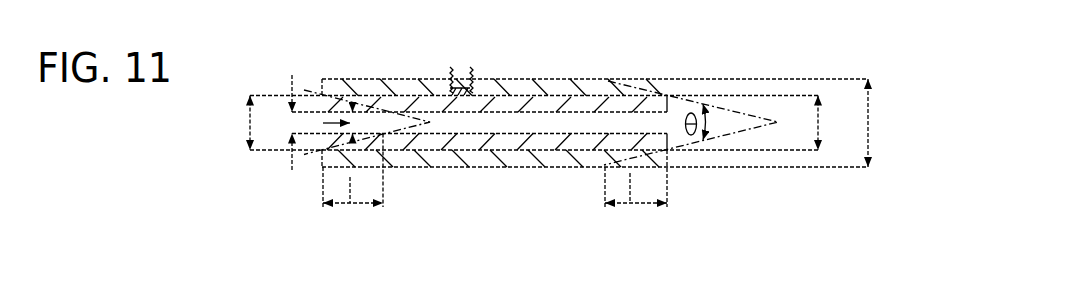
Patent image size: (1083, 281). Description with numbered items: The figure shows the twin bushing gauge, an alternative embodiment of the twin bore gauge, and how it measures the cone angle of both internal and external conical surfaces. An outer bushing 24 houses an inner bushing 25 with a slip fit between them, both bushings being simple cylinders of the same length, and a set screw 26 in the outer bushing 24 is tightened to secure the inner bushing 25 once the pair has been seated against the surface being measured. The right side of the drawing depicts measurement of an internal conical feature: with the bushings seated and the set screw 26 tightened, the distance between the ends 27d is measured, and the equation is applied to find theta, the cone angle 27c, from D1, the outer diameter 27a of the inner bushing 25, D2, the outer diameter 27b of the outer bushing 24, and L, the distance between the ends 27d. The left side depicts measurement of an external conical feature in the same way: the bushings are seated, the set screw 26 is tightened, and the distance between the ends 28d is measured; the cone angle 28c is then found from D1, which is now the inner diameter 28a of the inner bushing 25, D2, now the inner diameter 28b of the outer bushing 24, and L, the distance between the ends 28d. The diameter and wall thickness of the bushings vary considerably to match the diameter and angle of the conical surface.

The outer bushing 24 is at (402, 70).
The inner bushing 25 is at (635, 90).
The set screw 26 is at (477, 62).
The outer diameter of the inner bushing 27a is at (825, 118).
The outer diameter of the outer bushing 27b is at (877, 135).
The cone angle 27c is at (707, 124).
The distance between the ends 27d is at (640, 208).
The inner diameter of the inner bushing 28a is at (292, 80).
The inner diameter of the outer bushing 28b is at (242, 122).
The cone angle 28c is at (323, 123).
The distance between the ends 28d is at (352, 212).